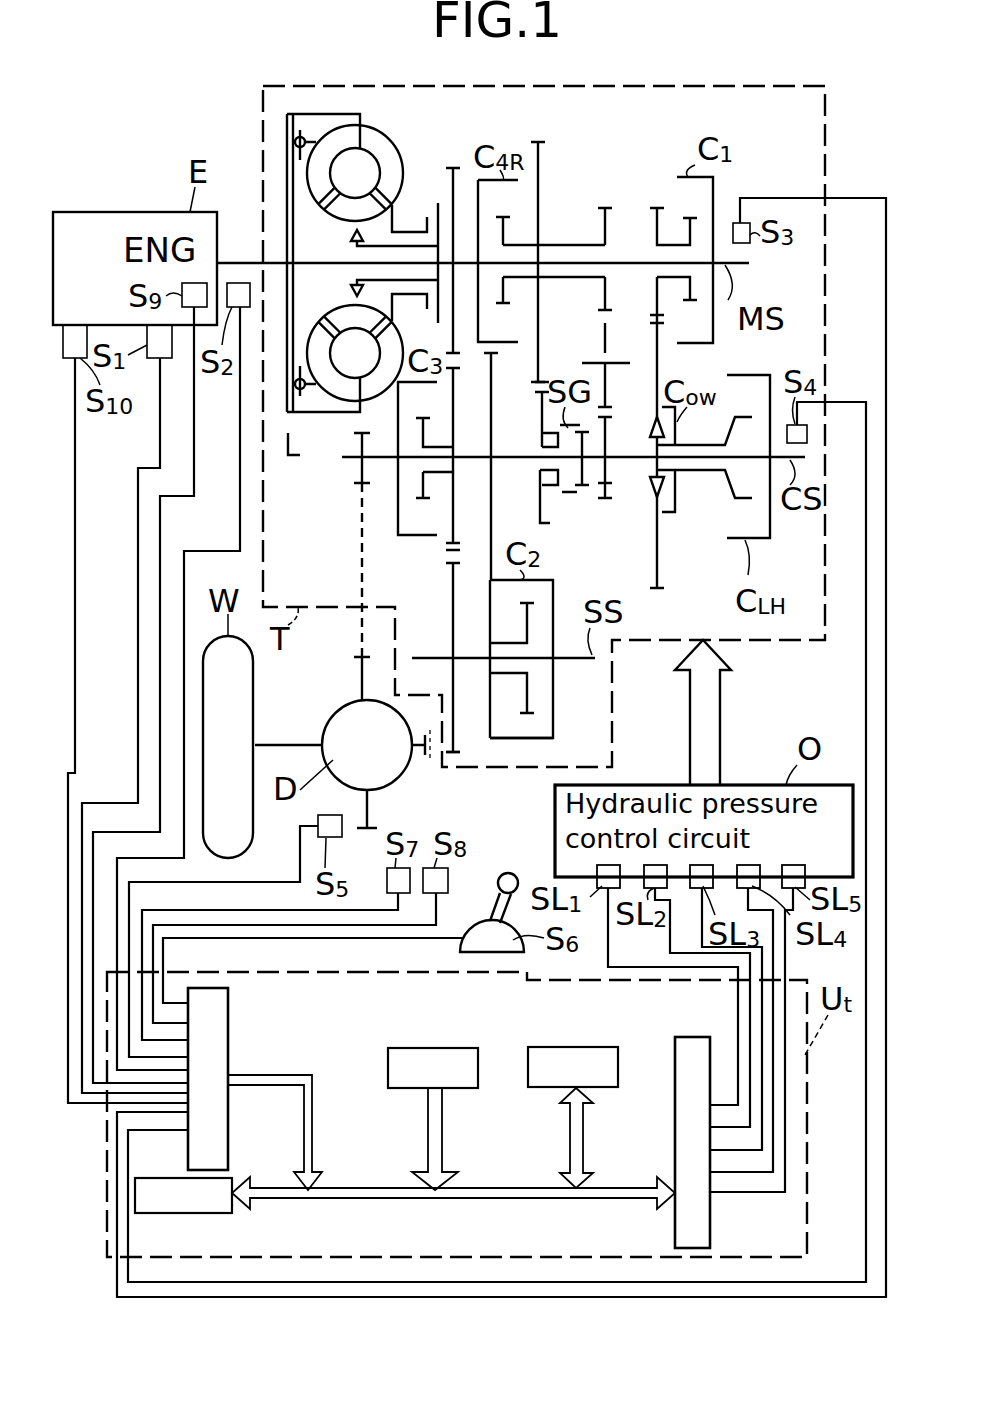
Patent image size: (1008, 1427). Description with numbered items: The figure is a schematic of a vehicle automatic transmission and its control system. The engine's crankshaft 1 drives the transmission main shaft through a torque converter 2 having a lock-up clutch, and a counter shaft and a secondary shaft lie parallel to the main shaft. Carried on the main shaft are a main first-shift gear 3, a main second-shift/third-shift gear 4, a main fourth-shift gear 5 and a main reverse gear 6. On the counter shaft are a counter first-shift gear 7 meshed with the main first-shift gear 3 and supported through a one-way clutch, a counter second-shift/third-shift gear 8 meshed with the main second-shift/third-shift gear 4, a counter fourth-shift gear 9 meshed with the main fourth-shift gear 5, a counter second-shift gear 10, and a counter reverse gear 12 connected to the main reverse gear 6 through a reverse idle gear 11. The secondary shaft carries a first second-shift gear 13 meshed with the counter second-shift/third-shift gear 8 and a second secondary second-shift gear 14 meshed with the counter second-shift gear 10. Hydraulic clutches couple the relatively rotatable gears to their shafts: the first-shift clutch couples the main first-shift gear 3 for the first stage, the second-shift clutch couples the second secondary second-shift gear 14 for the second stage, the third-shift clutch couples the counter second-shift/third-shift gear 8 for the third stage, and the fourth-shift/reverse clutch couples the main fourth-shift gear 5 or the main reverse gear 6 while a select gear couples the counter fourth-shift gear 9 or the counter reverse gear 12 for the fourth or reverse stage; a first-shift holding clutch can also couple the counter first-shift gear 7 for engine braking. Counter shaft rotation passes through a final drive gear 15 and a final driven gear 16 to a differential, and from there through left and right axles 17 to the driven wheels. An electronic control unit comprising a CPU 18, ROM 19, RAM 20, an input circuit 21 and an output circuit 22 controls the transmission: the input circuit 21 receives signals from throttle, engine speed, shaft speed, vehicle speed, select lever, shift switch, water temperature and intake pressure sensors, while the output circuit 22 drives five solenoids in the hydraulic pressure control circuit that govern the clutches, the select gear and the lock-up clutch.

The crankshaft 1 is at (240, 263).
The torque converter 2 is at (392, 152).
The main first-shift gear 3 is at (657, 208).
The main second-shift/third-shift gear 4 is at (453, 168).
The main fourth-shift gear 5 is at (540, 142).
The main reverse gear 6 is at (605, 208).
The counter first-shift gear 7 is at (660, 590).
The counter second-shift/third-shift gear 8 is at (453, 552).
The counter fourth-shift gear 9 is at (548, 525).
The counter second-shift gear 10 is at (494, 356).
The reverse idle gear 11 is at (600, 323).
The counter reverse gear 12 is at (605, 500).
The first second-shift gear 13 is at (455, 754).
The second secondary second-shift gear 14 is at (493, 740).
The final drive gear 15 is at (362, 485).
The final driven gear 16 is at (362, 657).
The left and right axles 17 is at (322, 742).
The CPU 18 is at (200, 1213).
The ROM 19 is at (418, 1048).
The RAM 20 is at (568, 1047).
The input circuit 21 is at (228, 1018).
The output circuit 22 is at (675, 1133).